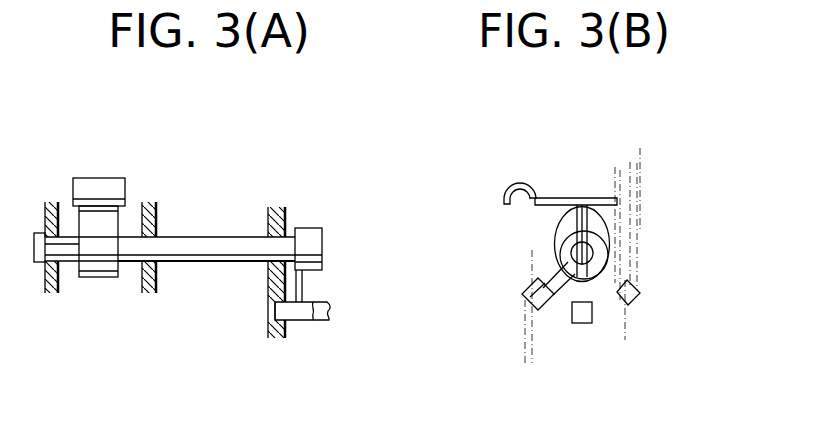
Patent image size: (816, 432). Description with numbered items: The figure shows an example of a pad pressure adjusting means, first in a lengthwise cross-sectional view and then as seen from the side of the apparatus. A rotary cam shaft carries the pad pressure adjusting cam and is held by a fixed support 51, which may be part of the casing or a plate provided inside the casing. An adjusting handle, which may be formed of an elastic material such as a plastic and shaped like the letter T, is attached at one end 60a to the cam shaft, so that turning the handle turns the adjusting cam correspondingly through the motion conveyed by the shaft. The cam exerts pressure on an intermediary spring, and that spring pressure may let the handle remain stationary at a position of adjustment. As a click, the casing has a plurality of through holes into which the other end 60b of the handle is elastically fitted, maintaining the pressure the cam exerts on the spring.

The fixed support 51 is at (282, 207).
The one end of adjusting handle 60a is at (311, 228).
The one end of adjusting handle 60b is at (323, 321).